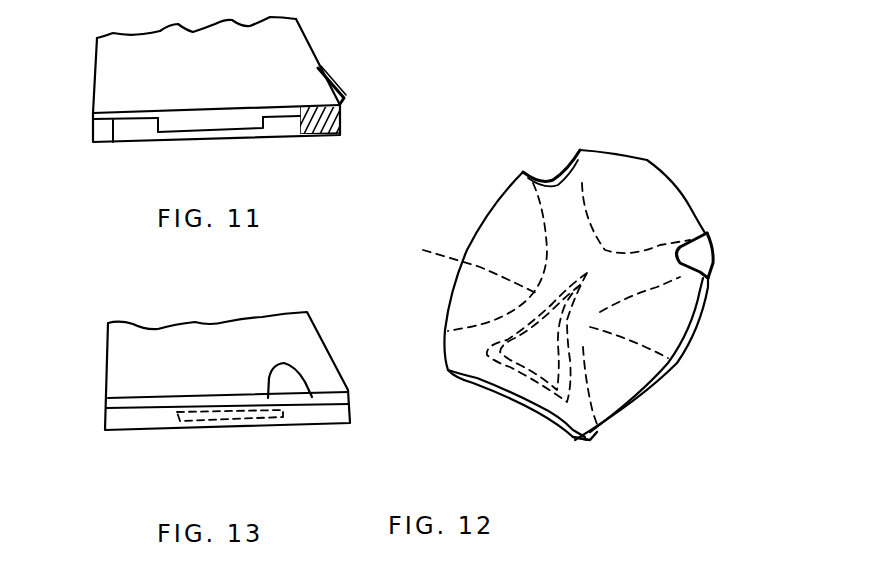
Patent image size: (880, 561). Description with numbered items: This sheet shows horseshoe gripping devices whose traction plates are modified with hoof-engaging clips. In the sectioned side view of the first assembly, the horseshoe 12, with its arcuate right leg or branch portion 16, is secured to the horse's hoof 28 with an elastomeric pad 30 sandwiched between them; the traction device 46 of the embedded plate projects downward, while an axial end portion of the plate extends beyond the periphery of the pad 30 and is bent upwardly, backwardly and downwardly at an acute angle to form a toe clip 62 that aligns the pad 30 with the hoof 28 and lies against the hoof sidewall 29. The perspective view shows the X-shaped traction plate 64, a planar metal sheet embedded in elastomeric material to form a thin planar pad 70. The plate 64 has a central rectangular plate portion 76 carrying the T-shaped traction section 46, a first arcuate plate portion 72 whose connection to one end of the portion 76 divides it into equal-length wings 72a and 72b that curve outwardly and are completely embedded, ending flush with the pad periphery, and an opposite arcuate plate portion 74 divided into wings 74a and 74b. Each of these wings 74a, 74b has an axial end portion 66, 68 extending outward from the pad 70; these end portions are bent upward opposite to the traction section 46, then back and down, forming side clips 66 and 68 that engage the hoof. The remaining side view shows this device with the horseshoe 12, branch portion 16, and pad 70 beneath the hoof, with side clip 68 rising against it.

In FIG. 11, the horseshoe 12 is at (108, 148).
In FIG. 13, the horseshoe 12 is at (138, 415).
In FIG. 11, the right leg or branch portion 16 is at (138, 143).
In FIG. 11, the hoof 28 is at (304, 26).
In FIG. 11, the hoof sidewall 29 is at (317, 50).
In FIG. 11, the elastomeric pad 30 is at (127, 117).
In FIG. 11, the traction device 46 is at (250, 122).
In FIG. 13, the traction device 46 is at (253, 422).
In FIG. 12, the traction device 46 is at (683, 384).
In FIG. 11, the toe clip 62 is at (336, 82).
In FIG. 12, the X-shaped traction plate 64 is at (587, 190).
In FIG. 12, the side clip 66 is at (557, 167).
In FIG. 13, the side clip 68 is at (285, 385).
In FIG. 12, the side clip 68 is at (697, 255).
In FIG. 13, the pad 70 is at (169, 405).
In FIG. 12, the pad 70 is at (650, 158).
In FIG. 12, the arcuate plate portion 72 is at (575, 412).
In FIG. 12, the first leg or wing 72a is at (460, 352).
In FIG. 12, the second leg or wing 72b is at (596, 440).
In FIG. 12, the arcuate plate portion 74 is at (605, 310).
In FIG. 12, the first leg or wing 74a is at (545, 197).
In FIG. 12, the second leg or wing 74b is at (712, 316).
In FIG. 12, the central rectangular plate portion 76 is at (465, 270).